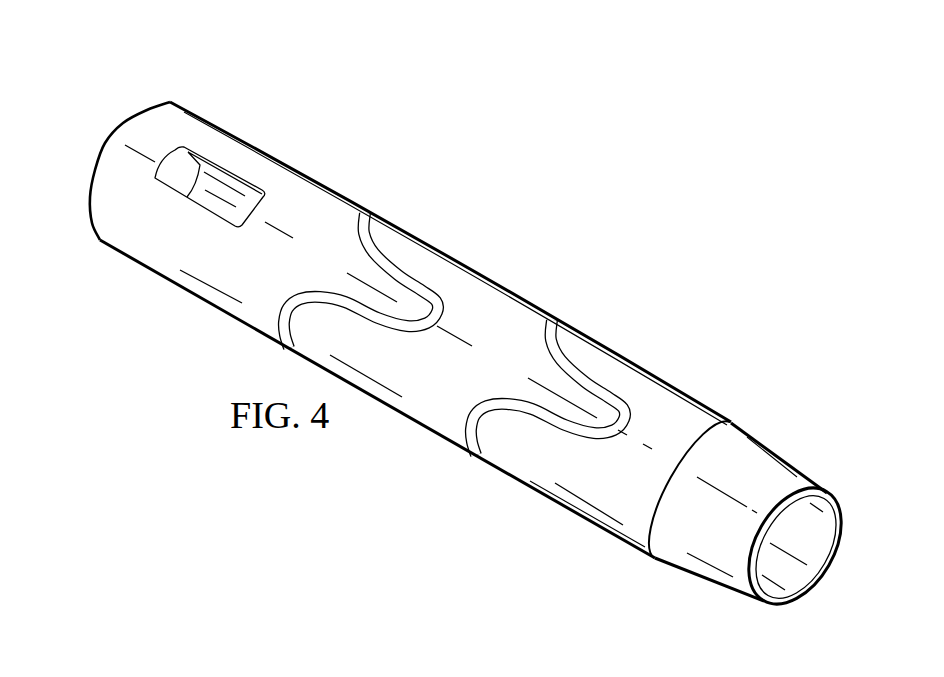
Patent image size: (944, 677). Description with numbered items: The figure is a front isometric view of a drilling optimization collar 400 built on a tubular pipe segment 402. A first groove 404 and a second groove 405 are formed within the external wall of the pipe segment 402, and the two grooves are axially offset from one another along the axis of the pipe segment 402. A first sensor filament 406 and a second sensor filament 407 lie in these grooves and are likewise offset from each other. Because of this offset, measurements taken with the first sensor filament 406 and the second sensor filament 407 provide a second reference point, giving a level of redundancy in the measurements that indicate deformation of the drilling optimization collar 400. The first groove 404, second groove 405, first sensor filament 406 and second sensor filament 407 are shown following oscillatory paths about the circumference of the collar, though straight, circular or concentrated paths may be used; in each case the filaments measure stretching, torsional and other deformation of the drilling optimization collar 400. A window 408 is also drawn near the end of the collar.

The drilling optimization collar 400 is at (475, 359).
The pipe segment 402 is at (643, 368).
The first groove 404 is at (548, 362).
The second groove 405 is at (361, 255).
The first sensor filament 406 is at (555, 325).
The second sensor filament 407 is at (373, 214).
The rectangular window 408 is at (228, 170).